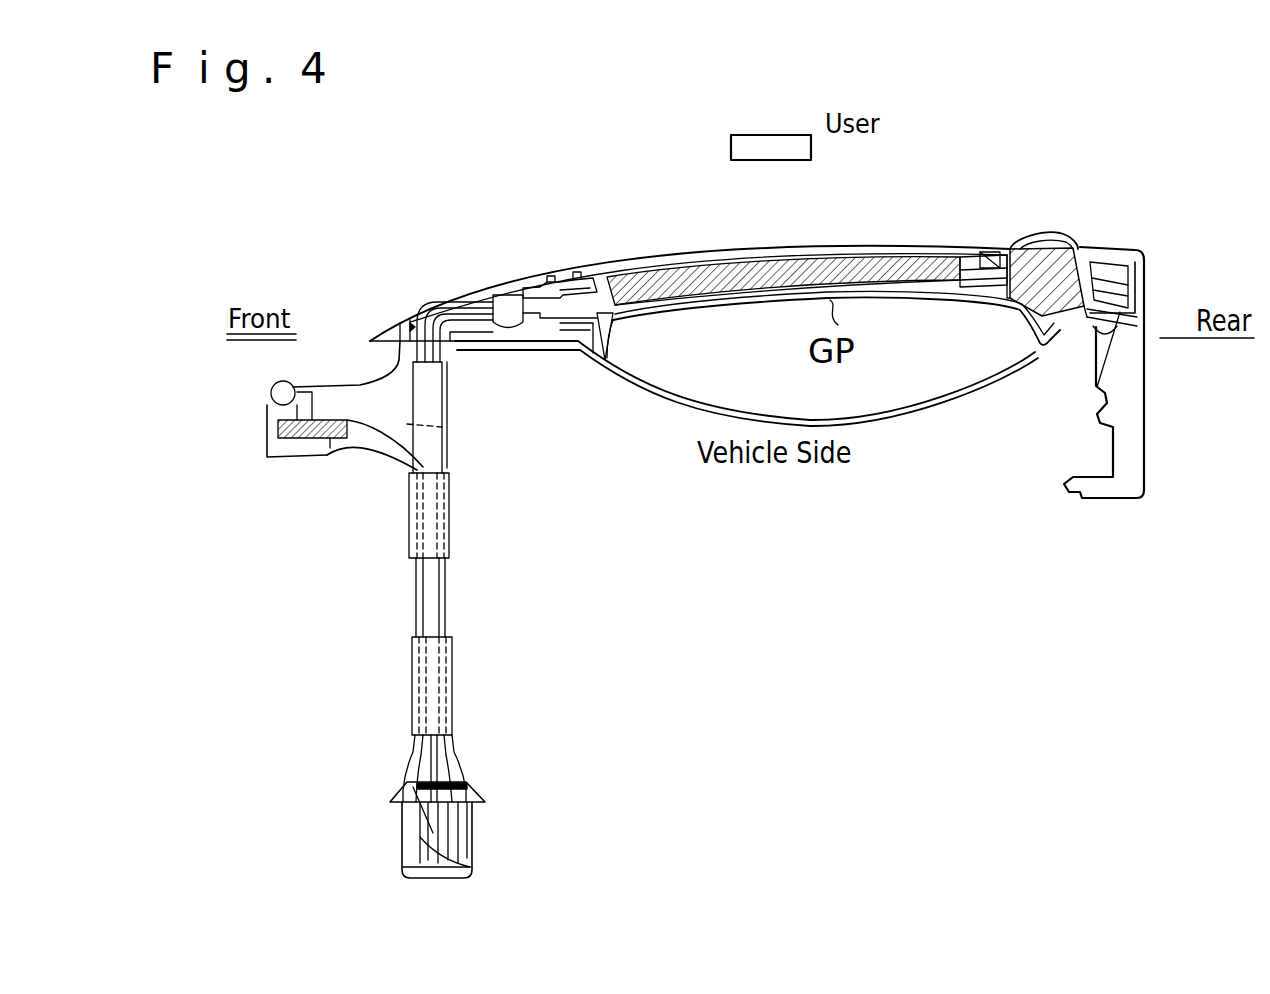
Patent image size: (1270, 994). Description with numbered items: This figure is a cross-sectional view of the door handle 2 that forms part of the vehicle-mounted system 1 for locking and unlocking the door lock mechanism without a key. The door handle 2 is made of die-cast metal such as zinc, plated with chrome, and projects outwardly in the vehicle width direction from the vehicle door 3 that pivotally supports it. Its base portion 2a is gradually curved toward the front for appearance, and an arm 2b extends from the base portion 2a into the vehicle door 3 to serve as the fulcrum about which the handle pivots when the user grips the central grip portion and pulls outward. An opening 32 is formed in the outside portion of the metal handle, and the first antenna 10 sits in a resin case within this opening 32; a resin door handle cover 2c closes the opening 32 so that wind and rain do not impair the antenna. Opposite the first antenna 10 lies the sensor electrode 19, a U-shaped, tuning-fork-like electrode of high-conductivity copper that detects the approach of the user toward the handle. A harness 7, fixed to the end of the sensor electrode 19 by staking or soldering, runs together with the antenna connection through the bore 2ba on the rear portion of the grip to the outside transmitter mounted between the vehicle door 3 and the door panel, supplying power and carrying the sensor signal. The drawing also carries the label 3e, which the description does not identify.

The system 1 is at (713, 243).
The door handle 2 is at (993, 247).
The base portion 2a is at (395, 320).
The arm 2b is at (347, 397).
The bore 2ba is at (445, 405).
The door handle cover 2c is at (843, 248).
The vehicle door 3 is at (1162, 337).
The vehicle side panel 3e is at (893, 420).
The harness 7 is at (462, 760).
The first antenna 10 is at (780, 273).
The sensor electrode 19 is at (904, 257).
The opening 32 is at (970, 260).